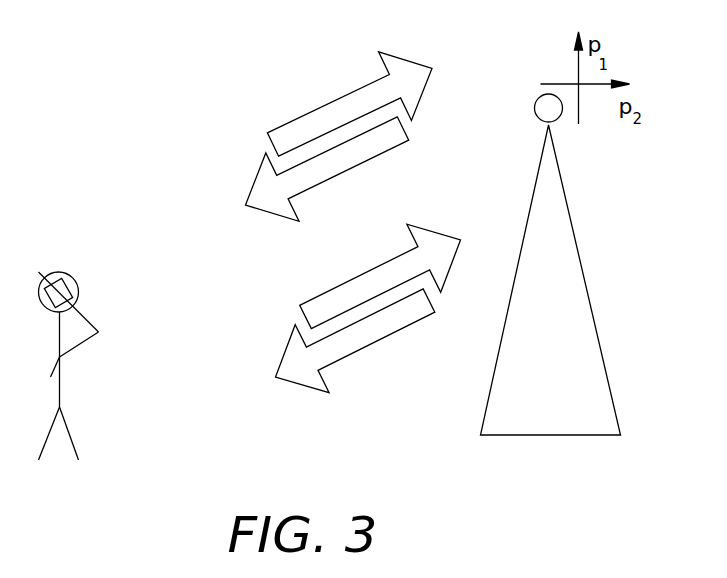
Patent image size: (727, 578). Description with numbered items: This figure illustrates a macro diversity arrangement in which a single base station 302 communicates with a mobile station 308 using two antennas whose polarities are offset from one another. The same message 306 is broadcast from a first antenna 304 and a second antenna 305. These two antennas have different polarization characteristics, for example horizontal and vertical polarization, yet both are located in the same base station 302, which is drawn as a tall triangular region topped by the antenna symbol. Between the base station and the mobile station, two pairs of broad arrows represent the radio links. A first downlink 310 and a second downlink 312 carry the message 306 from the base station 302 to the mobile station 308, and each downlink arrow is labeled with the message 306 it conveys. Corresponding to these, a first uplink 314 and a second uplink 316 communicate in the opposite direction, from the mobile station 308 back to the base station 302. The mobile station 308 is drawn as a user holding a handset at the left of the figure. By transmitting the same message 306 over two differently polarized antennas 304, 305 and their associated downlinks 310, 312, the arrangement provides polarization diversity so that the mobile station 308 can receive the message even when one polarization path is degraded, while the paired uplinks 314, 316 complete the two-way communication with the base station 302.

The base station 302 is at (550, 437).
The first antenna 304 is at (508, 78).
The second antenna 305 is at (537, 95).
The message 306 is at (351, 242).
The mobile station 308 is at (60, 270).
The first downlink 310 is at (378, 155).
The second downlink 312 is at (393, 335).
The first uplink 314 is at (317, 107).
The second uplink 316 is at (320, 288).